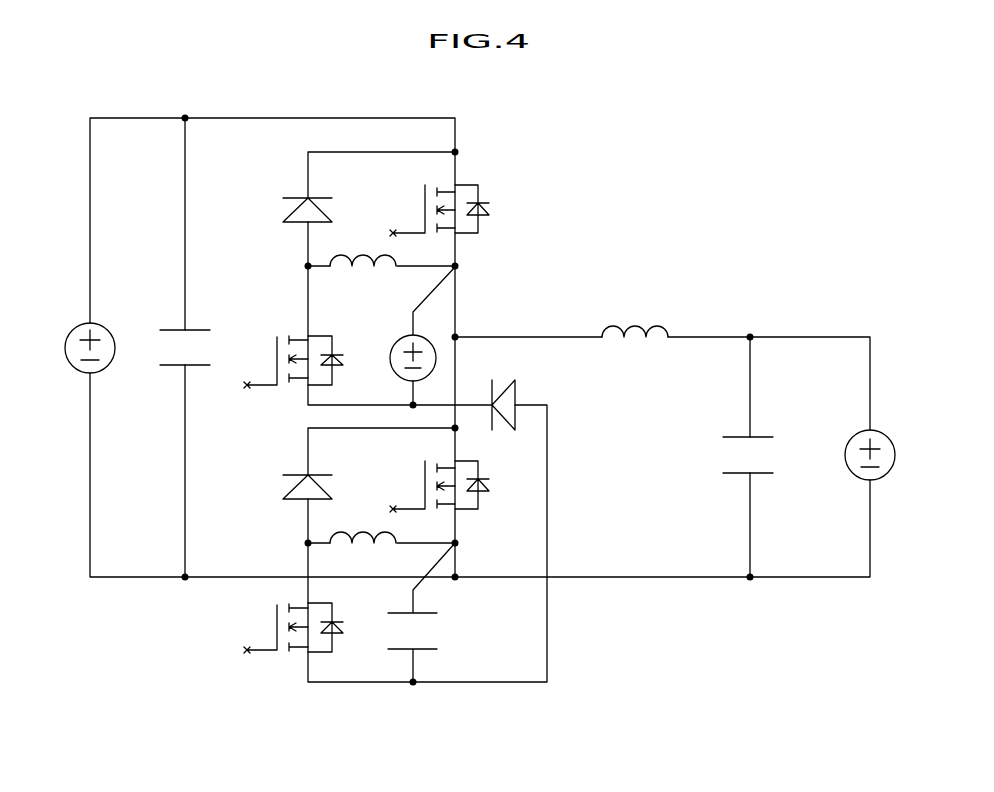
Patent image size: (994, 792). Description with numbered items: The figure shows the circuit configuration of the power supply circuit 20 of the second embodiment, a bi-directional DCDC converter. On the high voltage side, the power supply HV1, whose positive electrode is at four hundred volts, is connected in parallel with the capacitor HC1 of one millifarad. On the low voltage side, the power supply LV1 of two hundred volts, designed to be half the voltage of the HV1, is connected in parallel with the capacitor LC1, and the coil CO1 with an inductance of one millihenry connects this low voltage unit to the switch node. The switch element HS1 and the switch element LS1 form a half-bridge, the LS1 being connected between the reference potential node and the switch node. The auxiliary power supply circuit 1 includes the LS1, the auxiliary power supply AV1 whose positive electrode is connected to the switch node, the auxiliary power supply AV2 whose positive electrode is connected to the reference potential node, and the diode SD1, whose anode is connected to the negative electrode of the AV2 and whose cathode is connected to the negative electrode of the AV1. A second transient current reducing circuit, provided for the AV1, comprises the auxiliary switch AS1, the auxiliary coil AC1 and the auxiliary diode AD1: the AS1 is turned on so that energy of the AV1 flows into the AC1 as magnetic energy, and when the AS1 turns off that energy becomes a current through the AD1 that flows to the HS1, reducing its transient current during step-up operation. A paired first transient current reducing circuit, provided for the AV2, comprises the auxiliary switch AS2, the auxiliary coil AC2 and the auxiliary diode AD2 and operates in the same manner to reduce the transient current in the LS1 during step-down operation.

The power supply circuit 20 is at (836, 109).
The auxiliary power supply circuit 1 is at (596, 671).
The power supply HV1 is at (70, 329).
The capacitor HC1 is at (175, 329).
The auxiliary diode AD1 is at (287, 213).
The auxiliary coil AC1 is at (367, 248).
The switch element HS1 is at (490, 215).
The auxiliary switch AS1 is at (345, 363).
The auxiliary power supply AV1 is at (391, 372).
The diode SD1 is at (518, 388).
The coil CO1 is at (653, 338).
The capacitor LC1 is at (737, 437).
The power supply LV1 is at (888, 437).
The auxiliary diode AD2 is at (287, 491).
The auxiliary coil AC2 is at (367, 525).
The switch element LS1 is at (490, 491).
The auxiliary switch AS2 is at (345, 625).
The auxiliary power supply AV2 is at (423, 652).